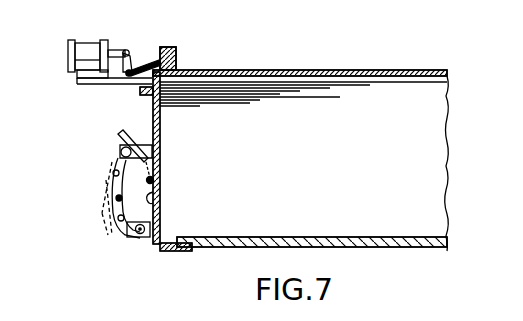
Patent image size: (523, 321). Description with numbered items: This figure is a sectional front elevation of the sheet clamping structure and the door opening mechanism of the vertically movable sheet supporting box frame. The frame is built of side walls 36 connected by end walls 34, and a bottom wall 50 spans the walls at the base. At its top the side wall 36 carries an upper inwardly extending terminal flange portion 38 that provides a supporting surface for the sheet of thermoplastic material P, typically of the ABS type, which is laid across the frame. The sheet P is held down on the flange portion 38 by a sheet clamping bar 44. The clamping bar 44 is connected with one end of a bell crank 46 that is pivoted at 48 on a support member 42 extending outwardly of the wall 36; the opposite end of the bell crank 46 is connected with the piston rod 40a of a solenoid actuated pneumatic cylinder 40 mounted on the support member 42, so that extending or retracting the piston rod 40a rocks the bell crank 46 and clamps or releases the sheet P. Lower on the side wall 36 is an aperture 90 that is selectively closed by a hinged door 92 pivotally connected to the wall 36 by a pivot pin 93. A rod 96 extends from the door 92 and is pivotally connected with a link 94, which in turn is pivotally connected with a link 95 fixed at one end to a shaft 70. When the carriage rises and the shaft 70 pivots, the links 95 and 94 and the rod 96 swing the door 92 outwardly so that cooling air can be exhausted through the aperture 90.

The pneumatic cylinder 40 is at (82, 43).
The piston rod 40a is at (119, 49).
The support member 42 is at (77, 81).
The sheet clamping bar 44 is at (177, 58).
The bell crank 46 is at (154, 64).
The pivot 48 is at (128, 77).
The rod 96 is at (137, 144).
The upper inwardly extending terminal flange portion 38 is at (168, 78).
The hinged door 92 is at (161, 153).
The aperture 90 is at (155, 173).
The link 94 is at (112, 190).
The pivot pin 93 is at (156, 200).
The side wall 36 is at (162, 211).
The link 95 is at (118, 228).
The shaft 70 is at (133, 241).
The sheet of thermoplastic material P is at (335, 70).
The end wall 34 is at (350, 160).
The bottom wall 50 is at (262, 237).